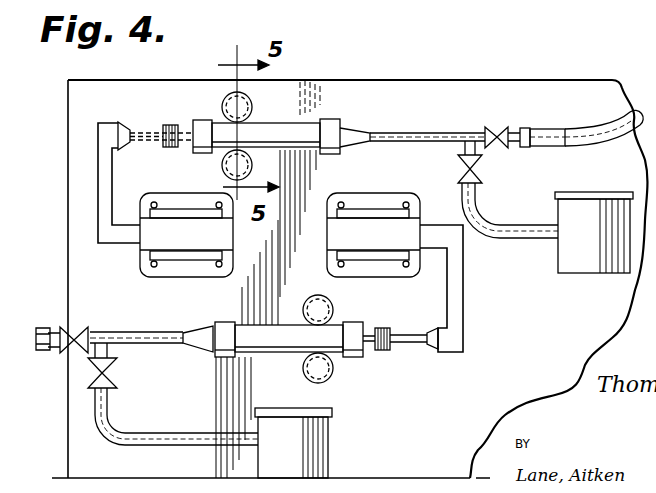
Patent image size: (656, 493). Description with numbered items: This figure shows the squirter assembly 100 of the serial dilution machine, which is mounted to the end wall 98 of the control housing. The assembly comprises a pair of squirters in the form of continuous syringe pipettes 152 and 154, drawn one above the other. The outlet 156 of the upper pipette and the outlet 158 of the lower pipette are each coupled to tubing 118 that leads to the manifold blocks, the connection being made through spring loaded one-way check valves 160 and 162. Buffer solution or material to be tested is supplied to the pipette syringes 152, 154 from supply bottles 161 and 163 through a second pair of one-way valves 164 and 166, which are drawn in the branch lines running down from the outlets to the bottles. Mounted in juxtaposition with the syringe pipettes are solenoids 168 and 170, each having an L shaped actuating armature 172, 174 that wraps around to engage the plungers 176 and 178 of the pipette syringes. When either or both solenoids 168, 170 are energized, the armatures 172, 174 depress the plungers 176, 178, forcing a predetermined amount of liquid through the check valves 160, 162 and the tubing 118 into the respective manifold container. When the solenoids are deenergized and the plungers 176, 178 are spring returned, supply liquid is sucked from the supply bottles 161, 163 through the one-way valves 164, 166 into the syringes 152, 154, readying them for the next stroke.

The end wall 98 is at (578, 318).
The squirter assembly 100 is at (390, 96).
The tubing 118 is at (556, 129).
The continuous syringe pipette 152 is at (284, 128).
The continuous syringe pipette 154 is at (288, 352).
The outlet 156 is at (427, 133).
The outlet 158 is at (153, 331).
The spring loaded one-way check valve 160 is at (494, 129).
The supply bottle 161 is at (600, 195).
The spring loaded one-way check valve 162 is at (72, 325).
The supply bottle 163 is at (318, 440).
The one-way valve 164 is at (480, 170).
The one-way valve 166 is at (118, 373).
The solenoid 168 is at (173, 208).
The solenoid 170 is at (376, 209).
The L shaped actuating armature 172 is at (100, 207).
The L shaped actuating armature 174 is at (465, 298).
The plunger 176 is at (145, 131).
The plunger 178 is at (405, 343).